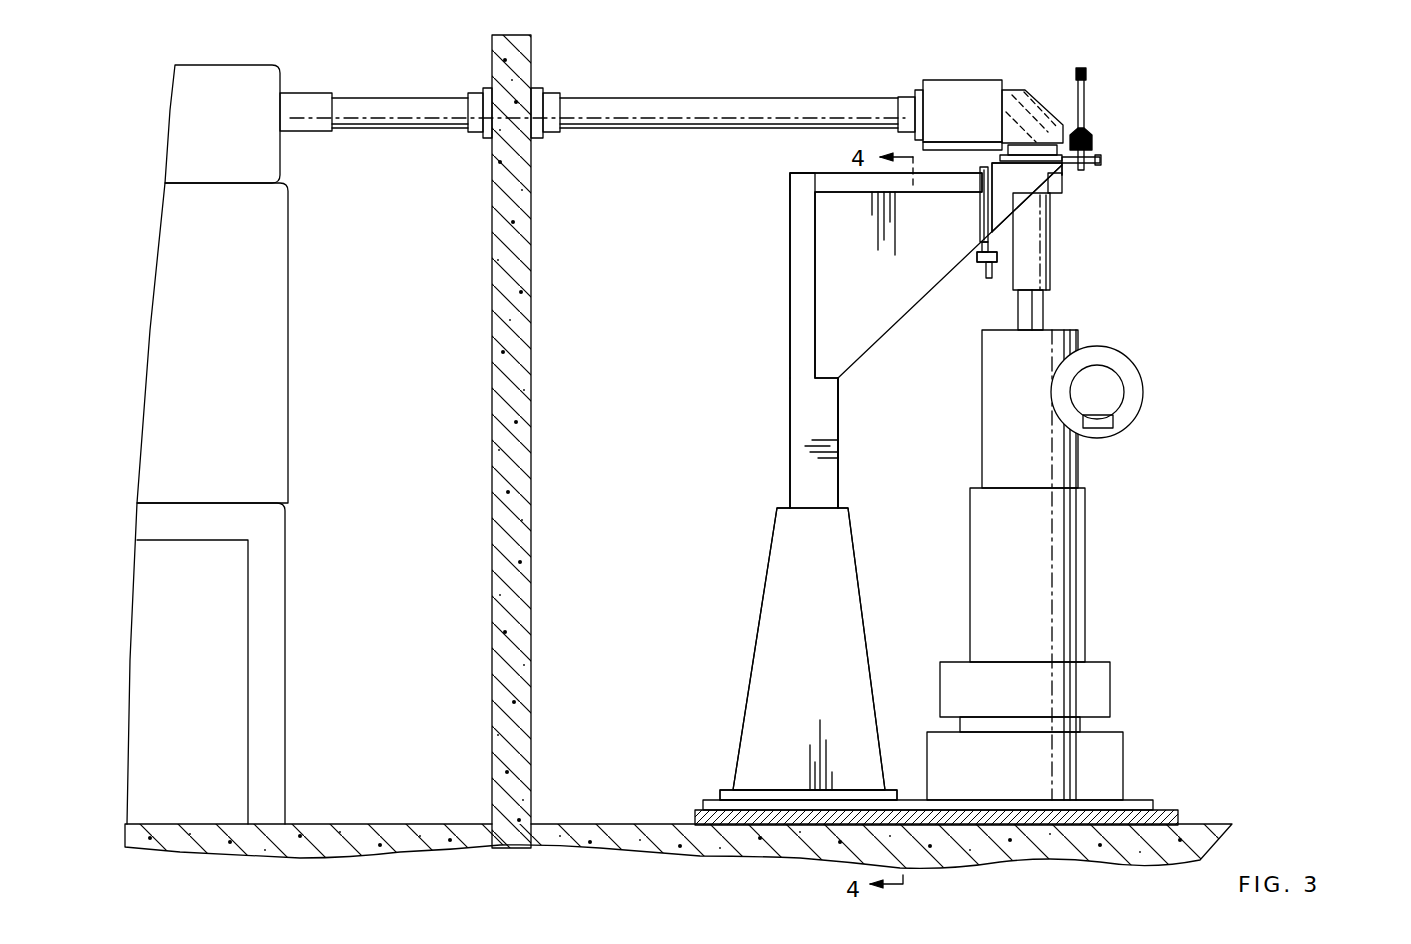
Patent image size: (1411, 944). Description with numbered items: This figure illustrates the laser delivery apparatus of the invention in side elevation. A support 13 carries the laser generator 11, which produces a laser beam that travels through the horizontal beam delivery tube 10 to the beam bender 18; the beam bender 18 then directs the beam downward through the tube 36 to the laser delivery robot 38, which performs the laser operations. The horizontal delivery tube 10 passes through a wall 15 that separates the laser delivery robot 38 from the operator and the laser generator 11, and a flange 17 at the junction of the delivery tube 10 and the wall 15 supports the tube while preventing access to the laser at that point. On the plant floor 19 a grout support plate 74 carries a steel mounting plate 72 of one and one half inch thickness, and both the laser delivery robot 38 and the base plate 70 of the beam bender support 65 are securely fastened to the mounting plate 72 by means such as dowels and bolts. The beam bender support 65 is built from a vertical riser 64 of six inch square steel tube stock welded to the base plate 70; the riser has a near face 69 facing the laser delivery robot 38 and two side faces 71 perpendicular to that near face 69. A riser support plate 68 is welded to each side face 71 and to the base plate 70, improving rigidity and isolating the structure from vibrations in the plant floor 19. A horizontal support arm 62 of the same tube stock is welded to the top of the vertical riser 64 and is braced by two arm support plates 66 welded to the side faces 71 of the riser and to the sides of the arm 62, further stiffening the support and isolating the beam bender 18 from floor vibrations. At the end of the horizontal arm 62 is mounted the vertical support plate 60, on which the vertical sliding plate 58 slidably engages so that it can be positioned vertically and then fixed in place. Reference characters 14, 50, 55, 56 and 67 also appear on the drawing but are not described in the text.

The horizontal beam delivery tube 10 is at (755, 106).
The laser generator 11 is at (312, 189).
The support 13 is at (302, 620).
The bearing housing 14 is at (958, 80).
The wall 15 is at (500, 493).
The flange 17 is at (552, 108).
The beam bender 18 is at (1047, 97).
The plant floor 19 is at (318, 822).
The tube 36 is at (1032, 270).
The laser delivery robot 38 is at (1102, 572).
The lever 50 is at (1092, 94).
The clamp assembly 55 is at (1094, 211).
The bracket 56 is at (1053, 185).
The vertical sliding plate 58 is at (998, 238).
The vertical support plate 60 is at (980, 223).
The horizontal support arm 62 is at (825, 170).
The vertical riser 64 is at (789, 300).
The beam bender support 65 is at (756, 328).
The arm support plates 66 is at (878, 318).
The base assembly 67 is at (738, 540).
The riser support plate 68 is at (773, 617).
The near face 69 is at (841, 397).
The base plate 70 is at (725, 790).
The side faces 71 is at (803, 418).
The mounting plate 72 is at (1140, 805).
The grout support plate 74 is at (1178, 818).